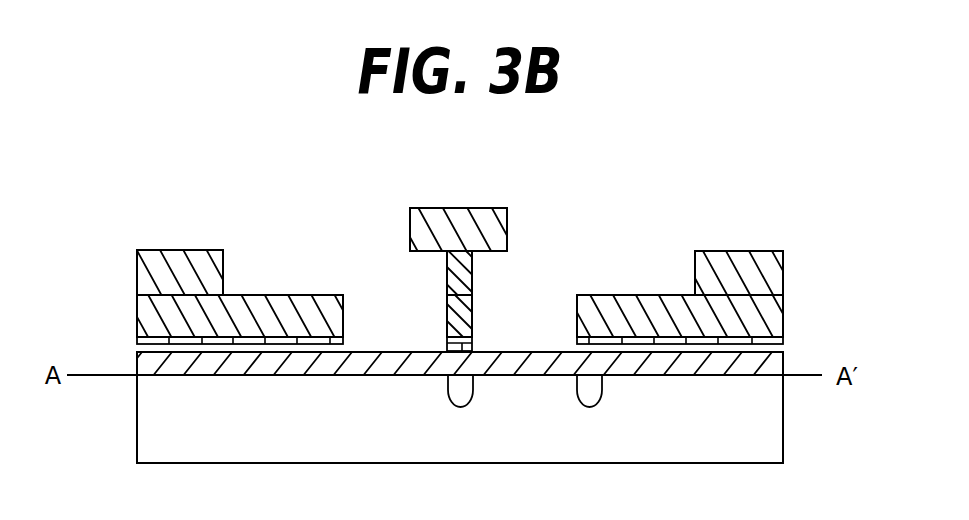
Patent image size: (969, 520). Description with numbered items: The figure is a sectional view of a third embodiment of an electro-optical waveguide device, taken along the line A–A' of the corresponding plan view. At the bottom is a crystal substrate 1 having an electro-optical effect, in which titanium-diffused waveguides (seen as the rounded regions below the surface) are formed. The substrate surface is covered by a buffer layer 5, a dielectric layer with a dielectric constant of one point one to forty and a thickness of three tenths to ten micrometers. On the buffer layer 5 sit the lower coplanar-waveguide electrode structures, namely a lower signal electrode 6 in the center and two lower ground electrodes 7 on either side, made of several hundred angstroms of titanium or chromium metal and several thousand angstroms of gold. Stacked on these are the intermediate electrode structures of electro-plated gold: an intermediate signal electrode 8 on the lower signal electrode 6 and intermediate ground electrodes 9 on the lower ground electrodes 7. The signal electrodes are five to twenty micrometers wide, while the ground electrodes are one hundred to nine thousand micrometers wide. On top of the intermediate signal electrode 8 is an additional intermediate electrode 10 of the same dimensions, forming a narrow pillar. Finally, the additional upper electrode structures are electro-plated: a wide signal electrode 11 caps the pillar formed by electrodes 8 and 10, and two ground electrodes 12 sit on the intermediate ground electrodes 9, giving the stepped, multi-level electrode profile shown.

The crystal substrate 1 is at (784, 427).
The buffer layer 5 is at (137, 368).
The lower signal electrode 6 is at (473, 344).
The lower ground electrode 7 is at (137, 340).
The intermediate signal electrode 8 is at (473, 314).
The intermediate ground electrode 9 is at (137, 313).
The additional intermediate electrode 10 is at (473, 270).
The upper signal electrode 11 is at (508, 234).
The upper ground electrode 12 is at (176, 250).